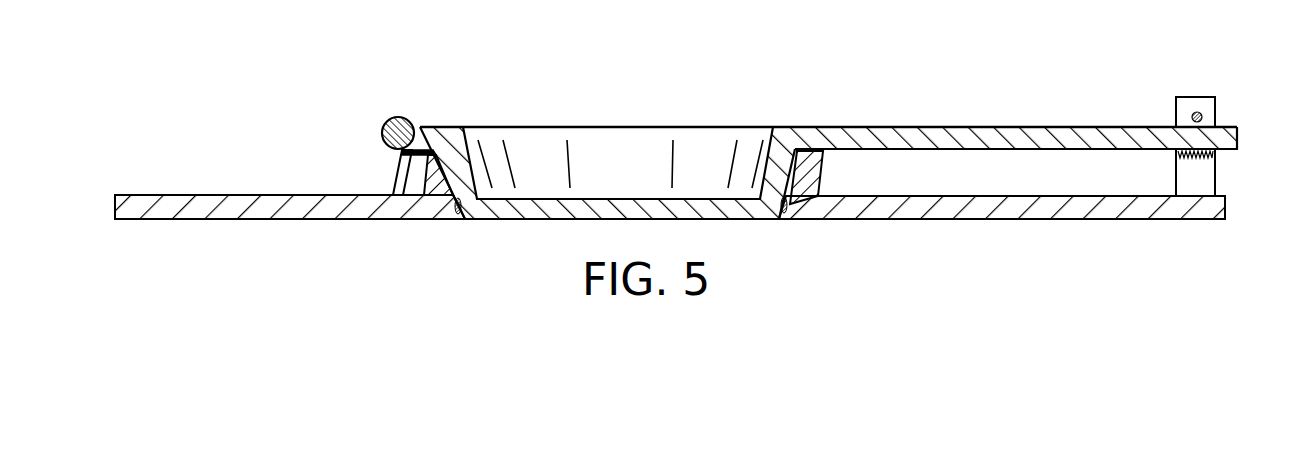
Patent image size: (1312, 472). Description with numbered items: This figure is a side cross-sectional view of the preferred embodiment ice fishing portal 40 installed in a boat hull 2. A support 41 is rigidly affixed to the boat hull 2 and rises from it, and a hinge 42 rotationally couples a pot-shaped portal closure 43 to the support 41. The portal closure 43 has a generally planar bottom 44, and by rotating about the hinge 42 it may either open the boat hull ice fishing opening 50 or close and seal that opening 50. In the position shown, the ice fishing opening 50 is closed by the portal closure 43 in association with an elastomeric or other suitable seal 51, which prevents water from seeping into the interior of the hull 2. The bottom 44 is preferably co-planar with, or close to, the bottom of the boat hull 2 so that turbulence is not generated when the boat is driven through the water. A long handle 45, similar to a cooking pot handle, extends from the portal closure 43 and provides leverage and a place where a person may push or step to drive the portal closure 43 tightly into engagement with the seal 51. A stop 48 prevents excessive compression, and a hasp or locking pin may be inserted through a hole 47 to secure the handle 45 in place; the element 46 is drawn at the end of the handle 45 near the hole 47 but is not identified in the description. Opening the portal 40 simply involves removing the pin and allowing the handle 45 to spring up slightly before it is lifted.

The boat hull 2 is at (215, 184).
The portal 40 is at (864, 88).
The support 41 is at (393, 172).
The hinge 42 is at (386, 121).
The portal closure 43 is at (605, 137).
The bottom 44 is at (728, 213).
The handle 45 is at (1022, 127).
The end block 46 is at (1212, 96).
The hole 47 is at (1203, 116).
The stop 48 is at (1216, 156).
The ice fishing opening 50 is at (464, 131).
The seal 51 is at (782, 220).